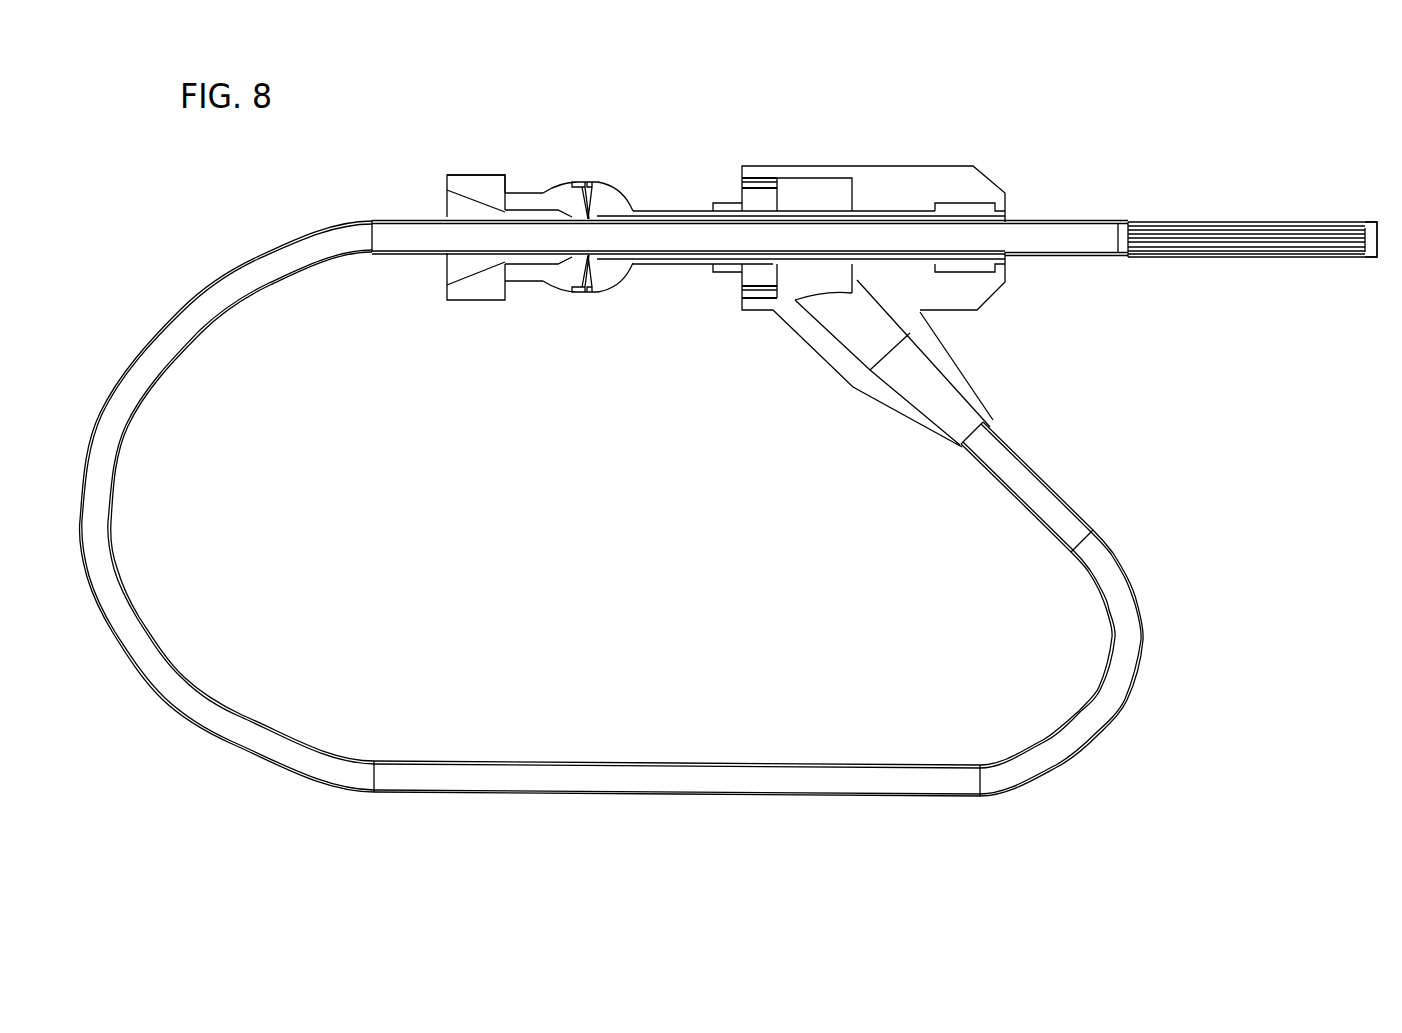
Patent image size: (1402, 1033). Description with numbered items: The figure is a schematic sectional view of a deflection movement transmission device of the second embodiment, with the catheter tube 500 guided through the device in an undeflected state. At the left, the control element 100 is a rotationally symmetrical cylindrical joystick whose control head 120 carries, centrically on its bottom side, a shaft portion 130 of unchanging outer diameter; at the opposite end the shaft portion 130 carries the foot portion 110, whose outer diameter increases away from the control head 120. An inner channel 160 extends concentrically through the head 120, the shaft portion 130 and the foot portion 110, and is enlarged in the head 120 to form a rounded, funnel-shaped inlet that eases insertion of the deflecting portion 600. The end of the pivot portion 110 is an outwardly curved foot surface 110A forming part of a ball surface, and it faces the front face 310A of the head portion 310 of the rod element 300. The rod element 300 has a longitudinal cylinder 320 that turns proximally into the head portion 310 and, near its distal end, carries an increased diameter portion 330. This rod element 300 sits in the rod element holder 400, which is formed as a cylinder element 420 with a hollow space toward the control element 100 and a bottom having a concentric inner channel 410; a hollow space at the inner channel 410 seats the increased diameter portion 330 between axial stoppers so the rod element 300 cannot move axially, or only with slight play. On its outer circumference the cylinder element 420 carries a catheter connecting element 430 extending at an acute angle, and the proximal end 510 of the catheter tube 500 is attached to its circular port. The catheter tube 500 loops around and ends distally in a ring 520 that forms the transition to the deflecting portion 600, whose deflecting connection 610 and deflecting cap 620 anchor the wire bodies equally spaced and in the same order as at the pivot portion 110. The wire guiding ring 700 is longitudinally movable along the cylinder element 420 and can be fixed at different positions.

The control element 100 is at (487, 285).
The foot portion 110 is at (578, 273).
The foot surface 110A is at (590, 215).
The control head 120 is at (458, 173).
The shaft portion 130 is at (512, 197).
The inner channel 160 is at (452, 207).
The rod element 300 is at (678, 268).
The head portion 310 is at (605, 273).
The front face of the head portion 310A is at (600, 202).
The longitudinal cylinder 320 is at (680, 207).
The increased diameter portion 330 is at (967, 268).
The rod element holder 400 is at (978, 190).
The inner channel 410 is at (892, 212).
The cylinder element 420 is at (807, 178).
The catheter connecting element 430 is at (907, 408).
The catheter tube 500 is at (1125, 565).
The proximal end of the catheter tube 510 is at (983, 422).
The ring 520 is at (1118, 222).
The deflecting portion 600 is at (1297, 252).
The deflecting connection 610 is at (1123, 253).
The deflecting cap 620 is at (1372, 252).
The wire guiding ring 700 is at (758, 278).